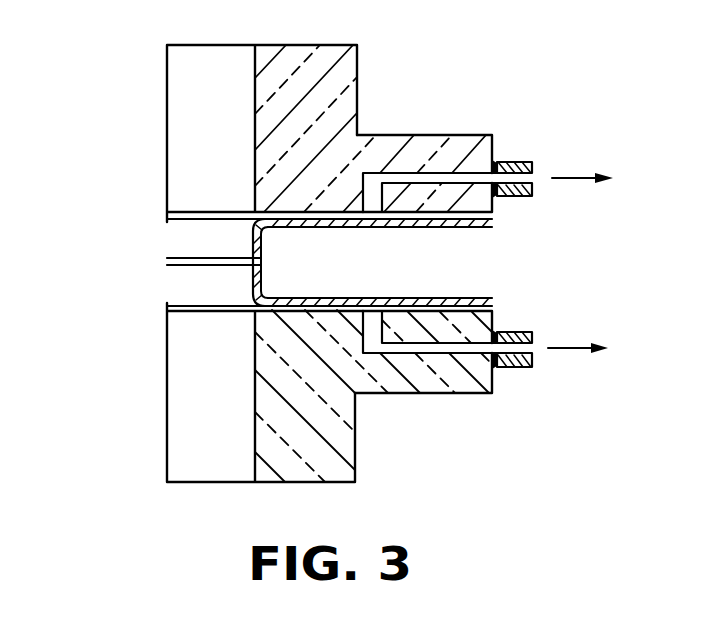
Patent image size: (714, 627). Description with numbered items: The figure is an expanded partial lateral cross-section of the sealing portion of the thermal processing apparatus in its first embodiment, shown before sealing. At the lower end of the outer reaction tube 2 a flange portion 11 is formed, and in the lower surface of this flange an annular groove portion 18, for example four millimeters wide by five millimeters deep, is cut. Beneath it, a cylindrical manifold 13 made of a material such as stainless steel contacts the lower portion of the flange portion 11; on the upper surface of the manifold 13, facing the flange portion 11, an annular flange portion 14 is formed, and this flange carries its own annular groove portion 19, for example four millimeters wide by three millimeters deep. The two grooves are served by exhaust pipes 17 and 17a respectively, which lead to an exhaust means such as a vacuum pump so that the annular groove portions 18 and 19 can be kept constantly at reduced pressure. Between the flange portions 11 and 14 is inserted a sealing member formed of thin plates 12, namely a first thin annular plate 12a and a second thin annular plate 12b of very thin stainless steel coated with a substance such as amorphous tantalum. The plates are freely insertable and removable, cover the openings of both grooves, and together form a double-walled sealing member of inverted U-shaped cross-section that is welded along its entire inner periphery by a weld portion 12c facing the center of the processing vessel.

The outer reaction tube 2 is at (357, 61).
The flange portion 11 is at (462, 135).
The thin plates 12 is at (87, 202).
The first thin annular plate 12a is at (190, 237).
The second thin annular plate 12b is at (181, 288).
The weld portion 12c is at (181, 253).
The cylindrical manifold 13 is at (360, 461).
The annular flange portion 14 is at (467, 394).
The exhaust pipe 17 is at (523, 161).
The exhaust pipe 17a is at (525, 368).
The annular groove portion 18 is at (371, 174).
The annular groove portion 19 is at (373, 354).